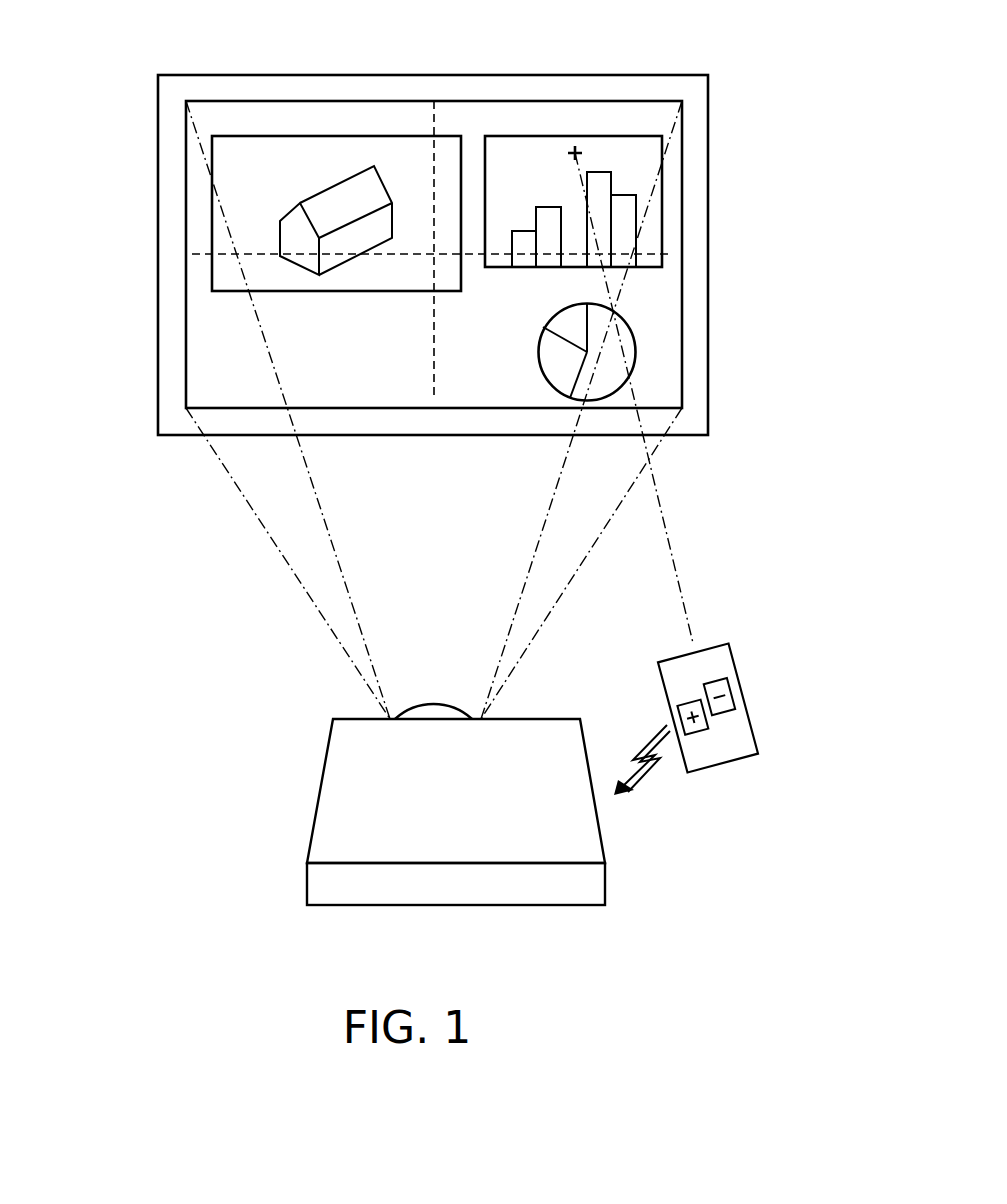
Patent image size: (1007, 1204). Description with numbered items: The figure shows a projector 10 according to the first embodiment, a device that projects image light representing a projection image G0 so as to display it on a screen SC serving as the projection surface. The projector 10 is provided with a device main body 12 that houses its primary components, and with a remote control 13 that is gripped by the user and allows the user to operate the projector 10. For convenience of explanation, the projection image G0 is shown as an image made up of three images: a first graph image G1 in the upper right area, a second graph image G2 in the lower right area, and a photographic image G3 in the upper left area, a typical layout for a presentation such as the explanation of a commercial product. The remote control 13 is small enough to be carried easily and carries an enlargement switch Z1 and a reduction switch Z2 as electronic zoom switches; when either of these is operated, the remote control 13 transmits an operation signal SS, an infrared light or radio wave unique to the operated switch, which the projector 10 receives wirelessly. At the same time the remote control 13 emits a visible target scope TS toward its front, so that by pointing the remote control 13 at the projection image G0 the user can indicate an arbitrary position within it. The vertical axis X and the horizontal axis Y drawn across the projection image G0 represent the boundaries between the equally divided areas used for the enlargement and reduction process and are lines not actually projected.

The projector 10 is at (680, 883).
The device main body 12 is at (314, 748).
The remote control 13 is at (742, 657).
The enlargement switch Z1 is at (692, 717).
The reduction switch Z2 is at (719, 696).
The operation signal SS is at (648, 770).
The screen SC is at (687, 74).
The projection image G0 is at (686, 128).
The first graph image G1 is at (667, 186).
The second graph image G2 is at (640, 326).
The photographic image G3 is at (208, 210).
The target scope TS is at (588, 148).
The vertical axis X is at (670, 250).
The horizontal axis Y is at (431, 126).